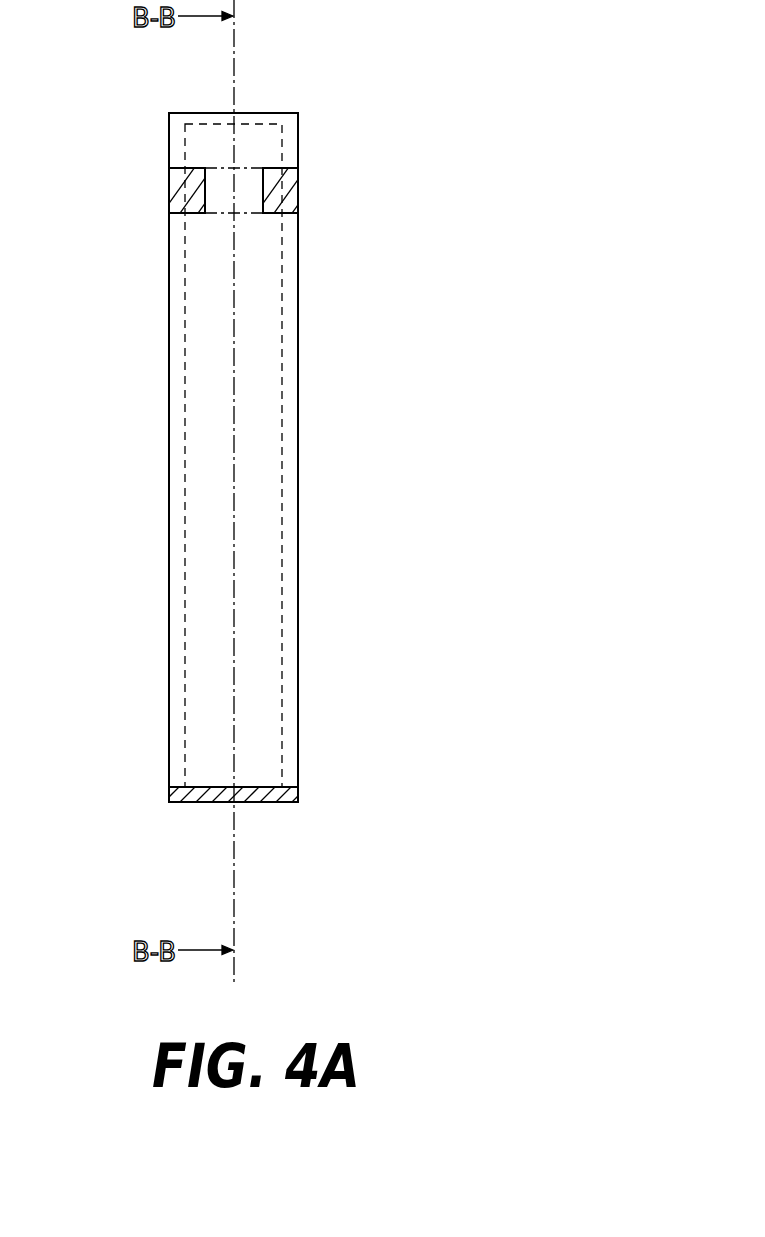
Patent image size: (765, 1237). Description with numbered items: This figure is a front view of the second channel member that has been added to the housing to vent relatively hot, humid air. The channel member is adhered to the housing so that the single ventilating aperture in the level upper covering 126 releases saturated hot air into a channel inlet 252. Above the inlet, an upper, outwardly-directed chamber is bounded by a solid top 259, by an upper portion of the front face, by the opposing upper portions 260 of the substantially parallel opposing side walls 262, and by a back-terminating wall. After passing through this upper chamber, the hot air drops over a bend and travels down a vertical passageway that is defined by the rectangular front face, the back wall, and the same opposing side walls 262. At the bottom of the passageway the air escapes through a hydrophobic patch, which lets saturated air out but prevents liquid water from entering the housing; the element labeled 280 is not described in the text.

The level upper covering 126 is at (182, 195).
The channel inlet 252 is at (243, 215).
The solid top 259 is at (256, 113).
The upper portions of opposing side walls 260 is at (298, 132).
The side walls 262 is at (169, 513).
The bottom closure 280 is at (281, 805).